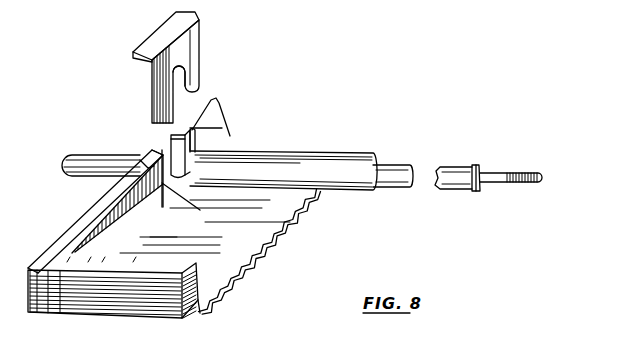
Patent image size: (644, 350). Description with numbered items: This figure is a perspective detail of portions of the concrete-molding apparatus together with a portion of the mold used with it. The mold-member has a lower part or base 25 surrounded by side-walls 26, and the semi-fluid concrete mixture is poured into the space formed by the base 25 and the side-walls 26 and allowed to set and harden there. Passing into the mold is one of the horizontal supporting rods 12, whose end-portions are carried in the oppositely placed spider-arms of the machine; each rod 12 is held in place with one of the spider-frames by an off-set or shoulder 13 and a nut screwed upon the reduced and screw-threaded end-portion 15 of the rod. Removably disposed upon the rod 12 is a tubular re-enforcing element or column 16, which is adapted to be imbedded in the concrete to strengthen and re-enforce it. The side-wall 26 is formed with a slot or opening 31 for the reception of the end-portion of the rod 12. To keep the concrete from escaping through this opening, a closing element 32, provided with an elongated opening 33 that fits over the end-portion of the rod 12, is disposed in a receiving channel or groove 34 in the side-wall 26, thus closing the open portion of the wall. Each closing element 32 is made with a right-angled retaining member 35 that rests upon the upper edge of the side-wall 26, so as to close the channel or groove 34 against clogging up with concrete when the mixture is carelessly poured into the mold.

The horizontal supporting rod 12 is at (79, 155).
The off-set or shoulder 13 is at (477, 168).
The reduced and screw-threaded end-portion 15 is at (532, 172).
The tubular re-enforcing element or column 16 is at (318, 158).
The base 25 is at (246, 233).
The side-wall 26 is at (92, 216).
The slot or opening 31 is at (168, 143).
The closing element 32 is at (192, 42).
The elongated opening 33 is at (173, 97).
The receiving channel or groove 34 is at (152, 166).
The right-angled retaining member 35 is at (162, 27).